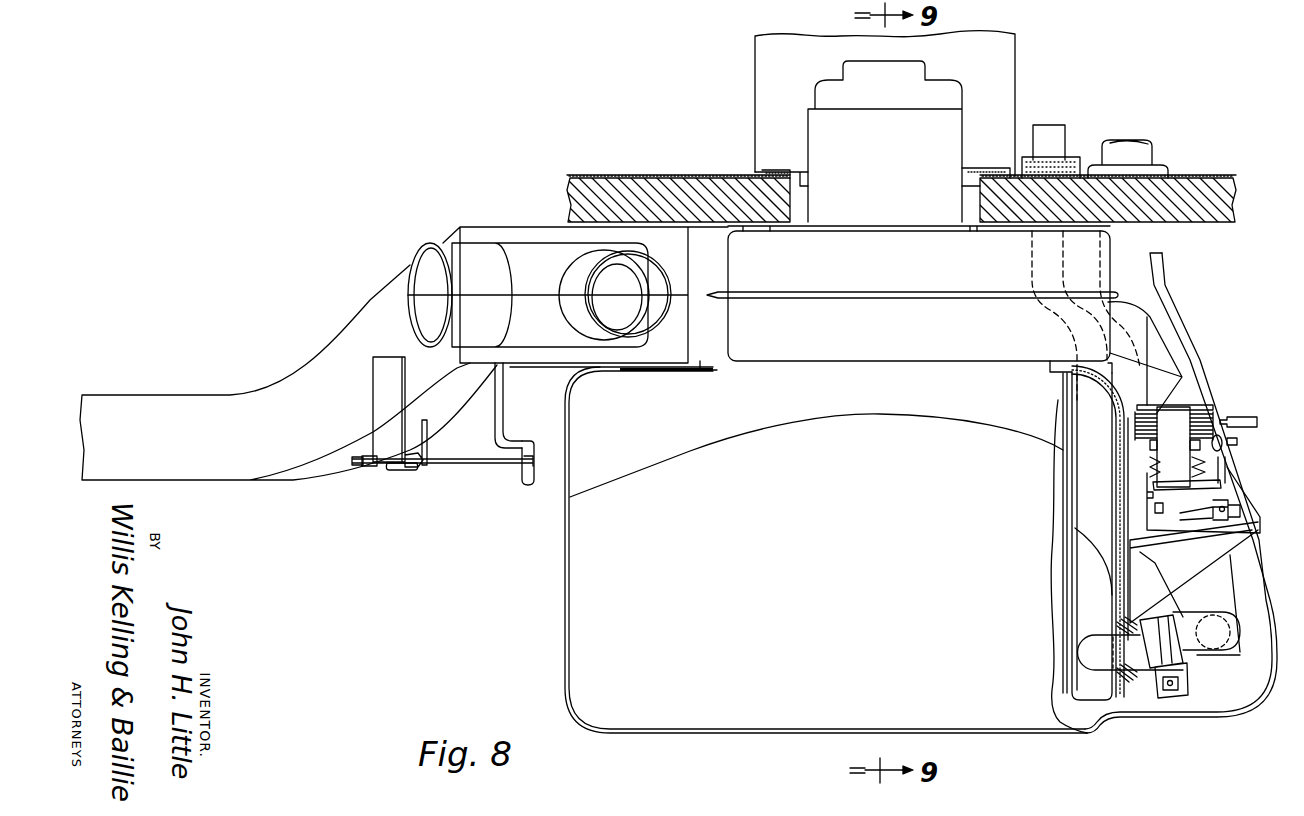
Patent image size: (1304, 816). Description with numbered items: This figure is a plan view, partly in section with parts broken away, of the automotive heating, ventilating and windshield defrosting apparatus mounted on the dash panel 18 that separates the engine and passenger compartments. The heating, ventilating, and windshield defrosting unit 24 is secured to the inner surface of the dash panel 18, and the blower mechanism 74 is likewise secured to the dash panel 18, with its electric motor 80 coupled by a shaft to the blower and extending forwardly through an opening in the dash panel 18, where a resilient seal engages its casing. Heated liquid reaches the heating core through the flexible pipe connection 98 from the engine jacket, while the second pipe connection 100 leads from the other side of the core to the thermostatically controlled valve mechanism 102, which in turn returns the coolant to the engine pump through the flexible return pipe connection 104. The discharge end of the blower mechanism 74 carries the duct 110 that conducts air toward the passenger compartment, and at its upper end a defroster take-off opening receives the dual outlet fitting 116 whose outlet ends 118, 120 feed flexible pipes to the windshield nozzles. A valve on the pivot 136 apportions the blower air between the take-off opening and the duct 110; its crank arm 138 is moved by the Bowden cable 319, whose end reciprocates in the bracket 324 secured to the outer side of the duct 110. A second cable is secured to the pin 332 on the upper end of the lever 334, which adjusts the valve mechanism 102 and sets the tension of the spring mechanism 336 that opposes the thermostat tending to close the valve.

The dash panel 18 is at (638, 192).
The heating, ventilating, and windshield defrosting unit 24 is at (633, 733).
The blower mechanism 74 is at (793, 345).
The electric motor 80 is at (952, 127).
The flexible pipe connection 98 is at (1048, 128).
The second pipe connection 100 is at (1088, 645).
The thermostatically controlled valve mechanism 102 is at (1213, 497).
The flexible return pipe connection 104 is at (1132, 140).
The duct 110 is at (223, 405).
The dual outlet fitting 116 is at (527, 253).
The outlet end 118 is at (428, 263).
The outlet end 120 is at (655, 276).
The pivot 136 is at (503, 390).
The crank arm 138 is at (513, 442).
The Bowden cable 319 is at (476, 464).
The bracket 324 is at (402, 472).
The pin 332 is at (1237, 420).
The lever 334 is at (1232, 450).
The spring mechanism 336 is at (1156, 473).